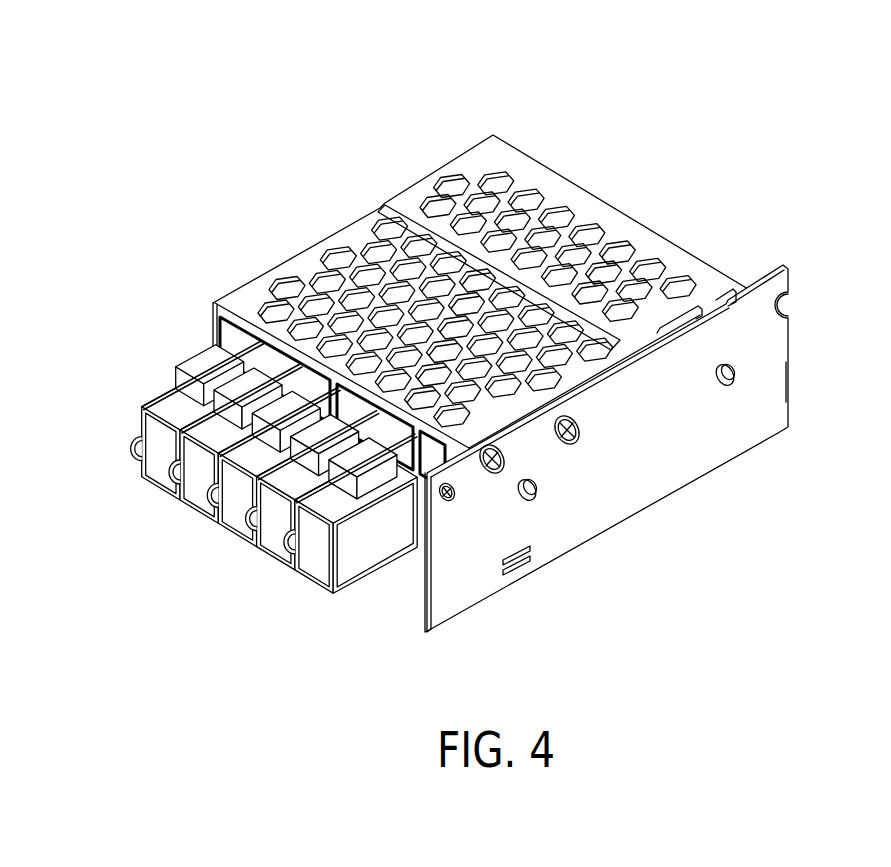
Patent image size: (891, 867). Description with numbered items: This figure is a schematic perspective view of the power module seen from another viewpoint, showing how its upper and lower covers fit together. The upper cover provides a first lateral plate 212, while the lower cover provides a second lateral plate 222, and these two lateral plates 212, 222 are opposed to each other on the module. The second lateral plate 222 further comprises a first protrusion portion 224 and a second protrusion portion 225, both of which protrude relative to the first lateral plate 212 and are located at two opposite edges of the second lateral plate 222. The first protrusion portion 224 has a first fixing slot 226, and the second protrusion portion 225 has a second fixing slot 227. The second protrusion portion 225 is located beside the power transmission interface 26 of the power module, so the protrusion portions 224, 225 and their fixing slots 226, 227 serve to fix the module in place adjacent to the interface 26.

The first lateral plate 212 is at (503, 361).
The second lateral plate 222 is at (633, 477).
The first protrusion portion 224 is at (779, 282).
The second protrusion portion 225 is at (457, 568).
The first fixing slot 226 is at (778, 305).
The second fixing slot 227 is at (453, 494).
The power transmission interface 26 is at (315, 550).